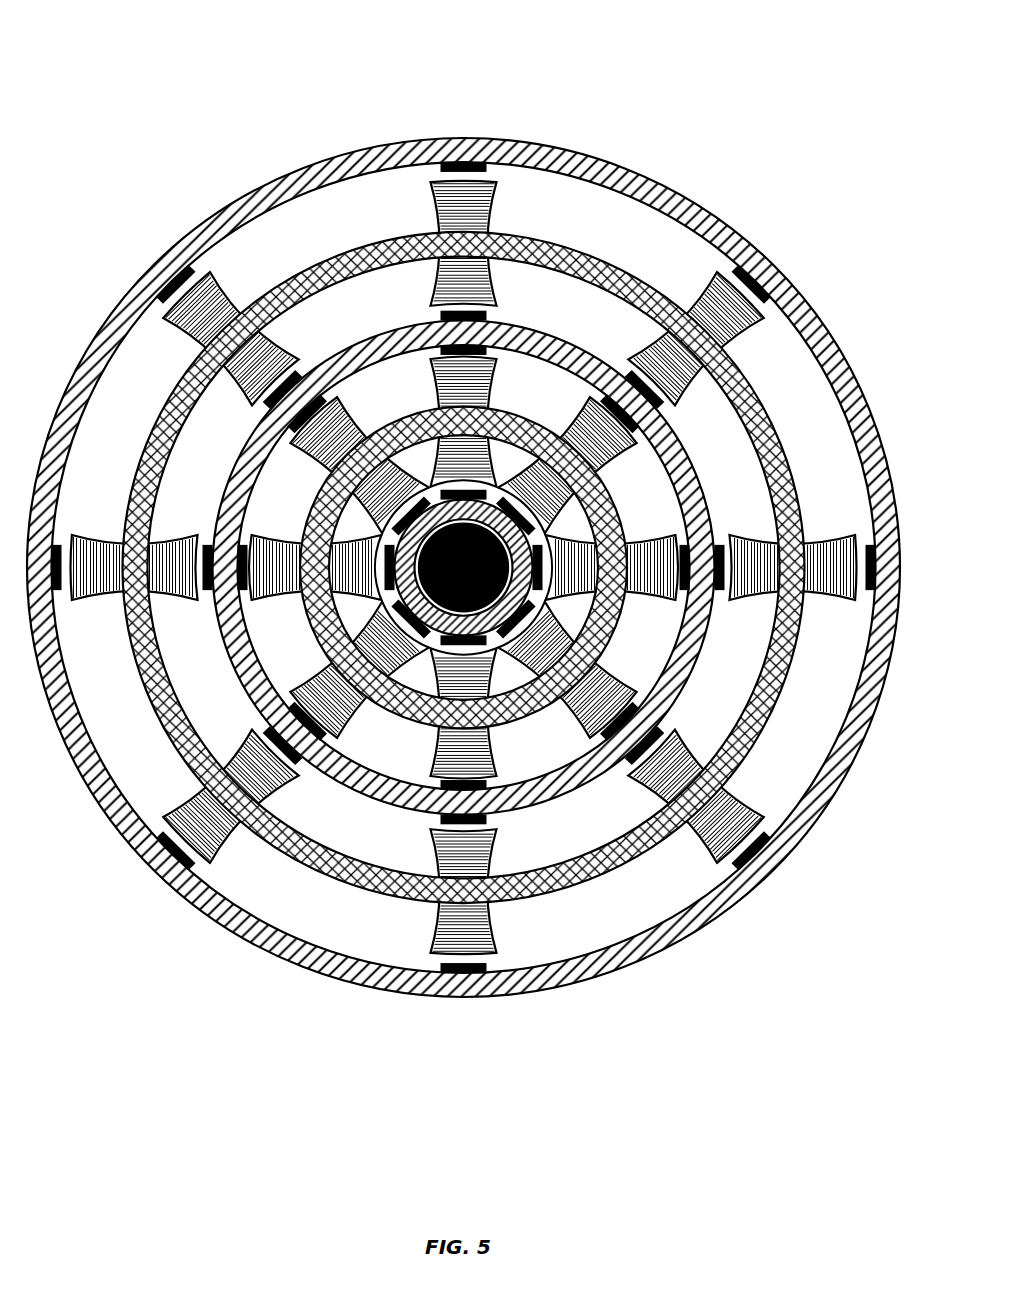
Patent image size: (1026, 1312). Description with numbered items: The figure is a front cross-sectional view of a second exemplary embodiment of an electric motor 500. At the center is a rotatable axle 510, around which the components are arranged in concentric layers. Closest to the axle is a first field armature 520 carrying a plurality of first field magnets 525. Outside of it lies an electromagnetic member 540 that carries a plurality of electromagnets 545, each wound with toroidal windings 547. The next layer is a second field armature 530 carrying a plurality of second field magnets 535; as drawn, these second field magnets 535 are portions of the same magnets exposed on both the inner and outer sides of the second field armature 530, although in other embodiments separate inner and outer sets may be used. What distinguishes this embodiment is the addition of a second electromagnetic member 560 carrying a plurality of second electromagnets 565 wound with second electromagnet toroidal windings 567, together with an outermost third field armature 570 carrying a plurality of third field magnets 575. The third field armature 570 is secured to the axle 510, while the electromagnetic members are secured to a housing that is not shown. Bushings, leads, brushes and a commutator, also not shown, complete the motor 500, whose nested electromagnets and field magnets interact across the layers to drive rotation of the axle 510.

The electric motor 500 is at (236, 44).
The rotatable axle 510 is at (418, 545).
The first field armature 520 is at (488, 651).
The first field magnets 525 is at (492, 638).
The second field armature 530 is at (437, 791).
The second field magnets 535 is at (360, 801).
The electromagnetic member 540 is at (616, 491).
The electromagnets 545 is at (673, 537).
The toroidal windings 547 is at (649, 594).
The second electromagnetic member 560 is at (599, 256).
The second electromagnets 565 is at (488, 185).
The second electromagnet toroidal windings 567 is at (488, 212).
The third field armature 570 is at (311, 164).
The third field magnets 575 is at (403, 147).